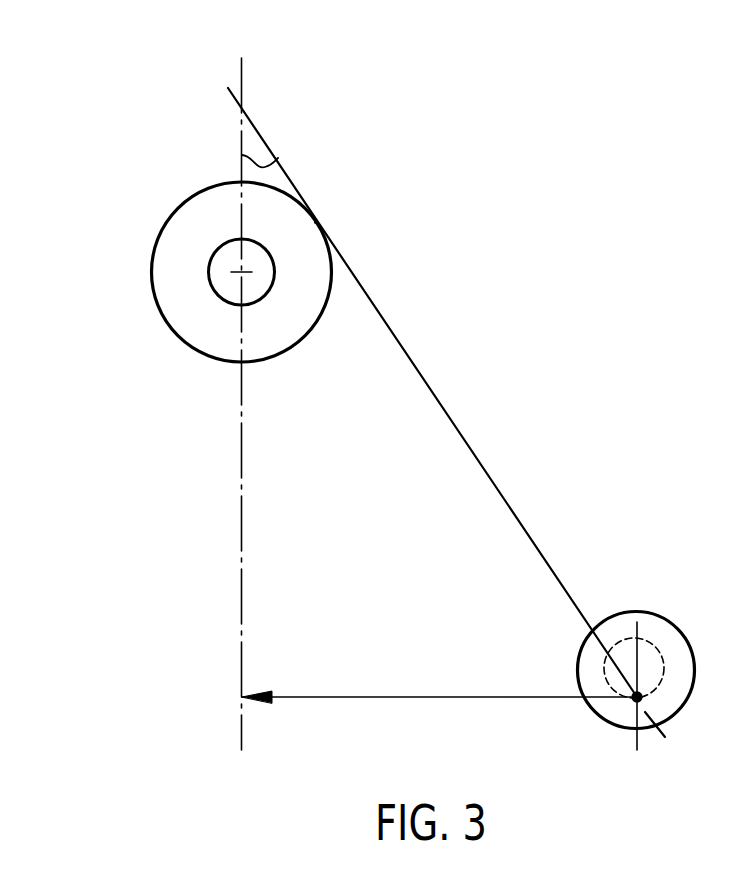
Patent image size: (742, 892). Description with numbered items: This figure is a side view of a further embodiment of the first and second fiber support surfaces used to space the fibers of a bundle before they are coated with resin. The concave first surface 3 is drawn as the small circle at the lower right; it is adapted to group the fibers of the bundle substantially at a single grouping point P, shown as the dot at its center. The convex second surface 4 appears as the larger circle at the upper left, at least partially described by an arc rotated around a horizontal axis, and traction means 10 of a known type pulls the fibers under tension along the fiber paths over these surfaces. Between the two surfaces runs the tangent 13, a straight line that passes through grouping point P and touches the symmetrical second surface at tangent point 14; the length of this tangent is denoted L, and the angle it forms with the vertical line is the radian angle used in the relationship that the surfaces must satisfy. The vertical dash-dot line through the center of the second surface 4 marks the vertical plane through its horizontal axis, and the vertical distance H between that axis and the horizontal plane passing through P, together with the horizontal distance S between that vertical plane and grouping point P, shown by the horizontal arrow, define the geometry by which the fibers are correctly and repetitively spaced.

The first surface 3 is at (684, 723).
The second surface 4 is at (340, 183).
The traction means 10 is at (332, 298).
The tangent 13 is at (475, 457).
The tangent point 14 is at (318, 218).
The vertical distance H is at (224, 404).
The horizontal distance S is at (439, 681).
The length of tangent L is at (523, 527).
The grouping point P is at (635, 701).